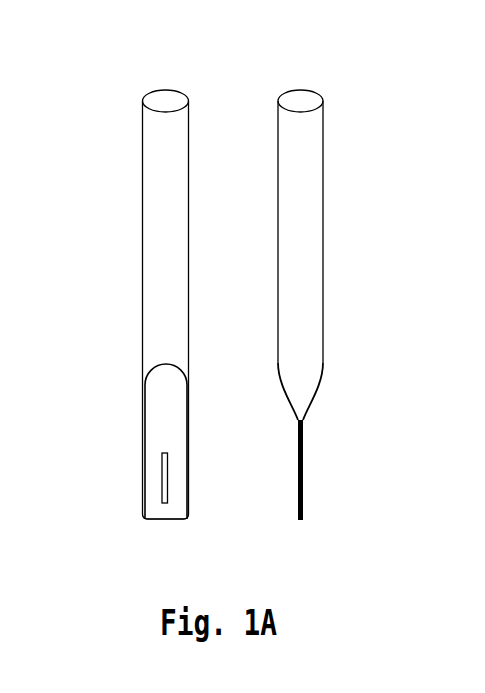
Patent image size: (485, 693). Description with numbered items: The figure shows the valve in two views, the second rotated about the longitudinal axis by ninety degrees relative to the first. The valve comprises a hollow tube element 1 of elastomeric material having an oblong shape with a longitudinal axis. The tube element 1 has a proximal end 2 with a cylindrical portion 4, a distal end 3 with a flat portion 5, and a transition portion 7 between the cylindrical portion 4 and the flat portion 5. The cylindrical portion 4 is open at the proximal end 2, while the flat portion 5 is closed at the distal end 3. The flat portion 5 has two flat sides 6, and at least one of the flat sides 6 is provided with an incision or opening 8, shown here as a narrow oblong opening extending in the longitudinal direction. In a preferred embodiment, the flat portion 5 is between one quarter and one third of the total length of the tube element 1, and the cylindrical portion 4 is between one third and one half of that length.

The hollow tube element 1 is at (287, 65).
The proximal end 2 is at (135, 120).
The distal end 3 is at (130, 495).
The cylindrical portion 4 is at (262, 103).
The flat portion 5 is at (262, 428).
The flat sides 6 is at (159, 448).
The transition portion 7 is at (262, 367).
The opening 8 is at (157, 475).